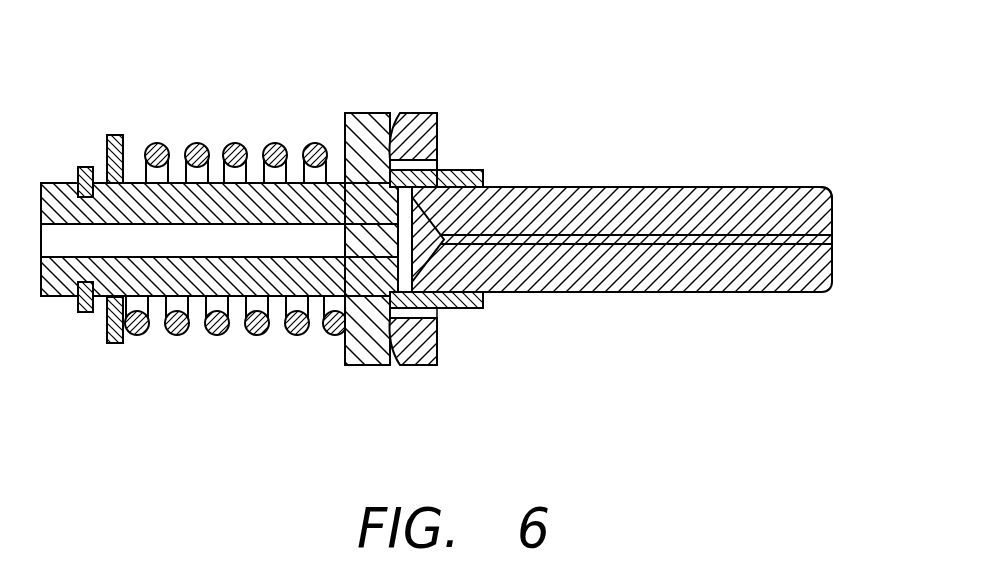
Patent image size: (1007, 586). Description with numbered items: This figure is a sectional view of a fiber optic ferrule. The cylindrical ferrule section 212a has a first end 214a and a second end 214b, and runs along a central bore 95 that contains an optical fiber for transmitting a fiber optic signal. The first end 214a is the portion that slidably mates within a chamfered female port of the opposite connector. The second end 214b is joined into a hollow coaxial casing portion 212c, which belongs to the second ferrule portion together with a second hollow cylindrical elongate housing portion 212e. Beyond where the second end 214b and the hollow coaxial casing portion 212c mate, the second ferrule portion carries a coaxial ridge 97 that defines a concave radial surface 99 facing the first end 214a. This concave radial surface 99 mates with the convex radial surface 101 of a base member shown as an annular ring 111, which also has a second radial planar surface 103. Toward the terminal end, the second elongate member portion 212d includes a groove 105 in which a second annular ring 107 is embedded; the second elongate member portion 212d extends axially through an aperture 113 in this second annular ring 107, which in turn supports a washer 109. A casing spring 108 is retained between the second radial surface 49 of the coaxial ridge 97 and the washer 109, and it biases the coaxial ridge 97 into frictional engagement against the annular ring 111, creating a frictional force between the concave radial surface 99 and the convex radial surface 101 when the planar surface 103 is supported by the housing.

The second radial surface 49 is at (345, 353).
The central bore 95 is at (690, 243).
The coaxial ridge 97 is at (360, 113).
The concave radial surface 99 is at (400, 113).
The convex radial surface 101 is at (397, 365).
The second radial planar surface 103 is at (437, 153).
The groove 105 is at (55, 183).
The second annular ring 107 is at (112, 345).
The casing spring 108 is at (277, 143).
The washer 109 is at (118, 135).
The annular ring 111 is at (437, 123).
The aperture 113 is at (108, 175).
The ferrule section 212a is at (623, 222).
The hollow coaxial casing portion 212c is at (473, 308).
The second elongate member portion 212d is at (41, 296).
The second hollow cylindrical elongate housing portion 212e is at (237, 297).
The first end 214a is at (835, 203).
The second end 214b is at (437, 170).